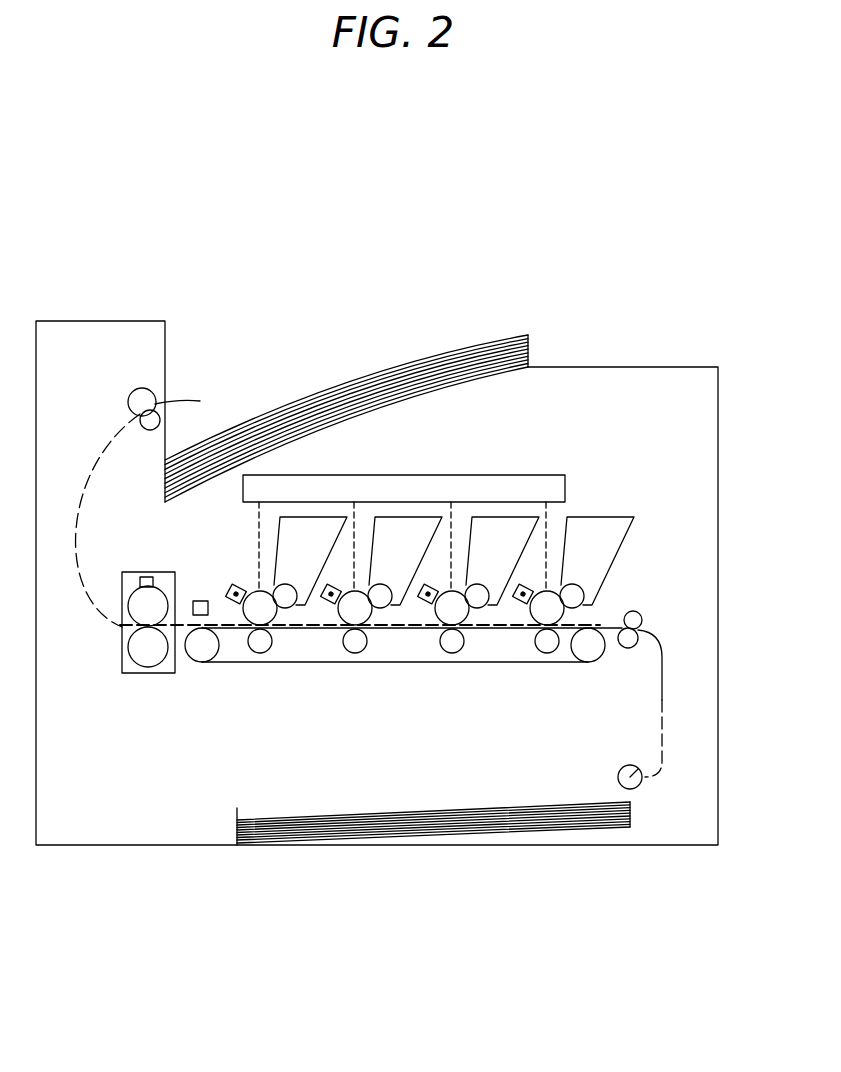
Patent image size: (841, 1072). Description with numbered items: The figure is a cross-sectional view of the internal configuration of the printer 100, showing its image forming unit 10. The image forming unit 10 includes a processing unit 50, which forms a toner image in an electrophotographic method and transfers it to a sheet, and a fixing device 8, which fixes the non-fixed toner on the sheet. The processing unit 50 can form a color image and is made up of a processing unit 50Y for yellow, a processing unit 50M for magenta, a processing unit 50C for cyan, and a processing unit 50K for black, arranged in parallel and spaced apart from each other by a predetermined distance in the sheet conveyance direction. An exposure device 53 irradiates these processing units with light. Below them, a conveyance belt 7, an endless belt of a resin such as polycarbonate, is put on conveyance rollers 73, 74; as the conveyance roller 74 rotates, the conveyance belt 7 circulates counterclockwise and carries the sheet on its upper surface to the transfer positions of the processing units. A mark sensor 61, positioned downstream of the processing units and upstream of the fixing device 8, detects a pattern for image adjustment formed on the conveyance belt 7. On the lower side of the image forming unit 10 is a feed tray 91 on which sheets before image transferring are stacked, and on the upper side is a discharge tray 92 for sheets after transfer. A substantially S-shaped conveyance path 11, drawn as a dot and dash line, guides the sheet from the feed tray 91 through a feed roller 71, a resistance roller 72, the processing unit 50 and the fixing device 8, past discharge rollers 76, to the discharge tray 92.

The printer 100 is at (612, 263).
The image forming unit 10 is at (673, 425).
The conveyance path 11 is at (662, 690).
The discharge rollers 76 is at (142, 390).
The discharge tray 92 is at (337, 410).
The exposure device 53 is at (512, 475).
The mark sensor 61 is at (198, 599).
The fixing device 8 is at (148, 673).
The conveyance belt 7 is at (230, 662).
The conveyance roller 74 is at (198, 652).
The conveyance roller 73 is at (590, 656).
The processing unit 50 is at (242, 731).
The processing unit 50Y is at (285, 662).
The processing unit 50M is at (366, 662).
The processing unit 50C is at (457, 662).
The processing unit 50K is at (540, 662).
The resistance roller 72 is at (633, 612).
The feed roller 71 is at (618, 777).
The feed tray 91 is at (462, 822).